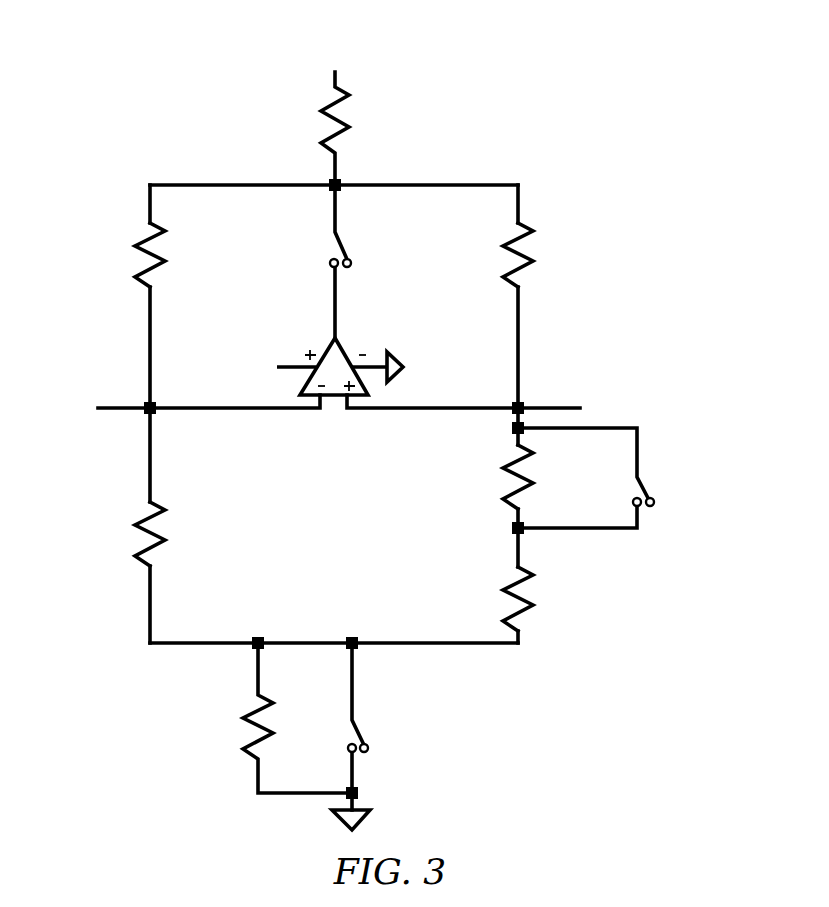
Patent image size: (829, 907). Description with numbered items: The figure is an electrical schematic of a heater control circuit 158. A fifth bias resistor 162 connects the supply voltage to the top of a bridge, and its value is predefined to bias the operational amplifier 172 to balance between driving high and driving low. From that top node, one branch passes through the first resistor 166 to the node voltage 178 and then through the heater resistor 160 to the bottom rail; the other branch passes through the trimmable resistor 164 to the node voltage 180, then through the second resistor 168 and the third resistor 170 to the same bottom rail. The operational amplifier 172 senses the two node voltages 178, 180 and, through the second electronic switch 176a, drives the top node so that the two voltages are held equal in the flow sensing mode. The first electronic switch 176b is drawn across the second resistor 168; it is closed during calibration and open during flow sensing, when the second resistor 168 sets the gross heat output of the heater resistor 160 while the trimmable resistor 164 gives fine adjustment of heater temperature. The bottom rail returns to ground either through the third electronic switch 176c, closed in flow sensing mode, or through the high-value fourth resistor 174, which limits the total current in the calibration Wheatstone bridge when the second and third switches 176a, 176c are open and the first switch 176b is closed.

The heater control circuit 158 is at (512, 84).
The heater resistor RH 160 is at (160, 552).
The fifth resistor RBIAS 162 is at (326, 122).
The trimmable resistor RB 164 is at (512, 260).
The first resistor RA 166 is at (140, 254).
The second resistor RC 168 is at (508, 478).
The third resistor RR 170 is at (508, 598).
The operational amplifier 172 is at (330, 344).
The fourth resistor RCL 174 is at (250, 726).
The second electronic switch 176a is at (340, 248).
The first electronic switch 176b is at (644, 490).
The third electronic switch 176c is at (362, 736).
The voltage VH 178 is at (128, 410).
The voltage VT 180 is at (542, 408).